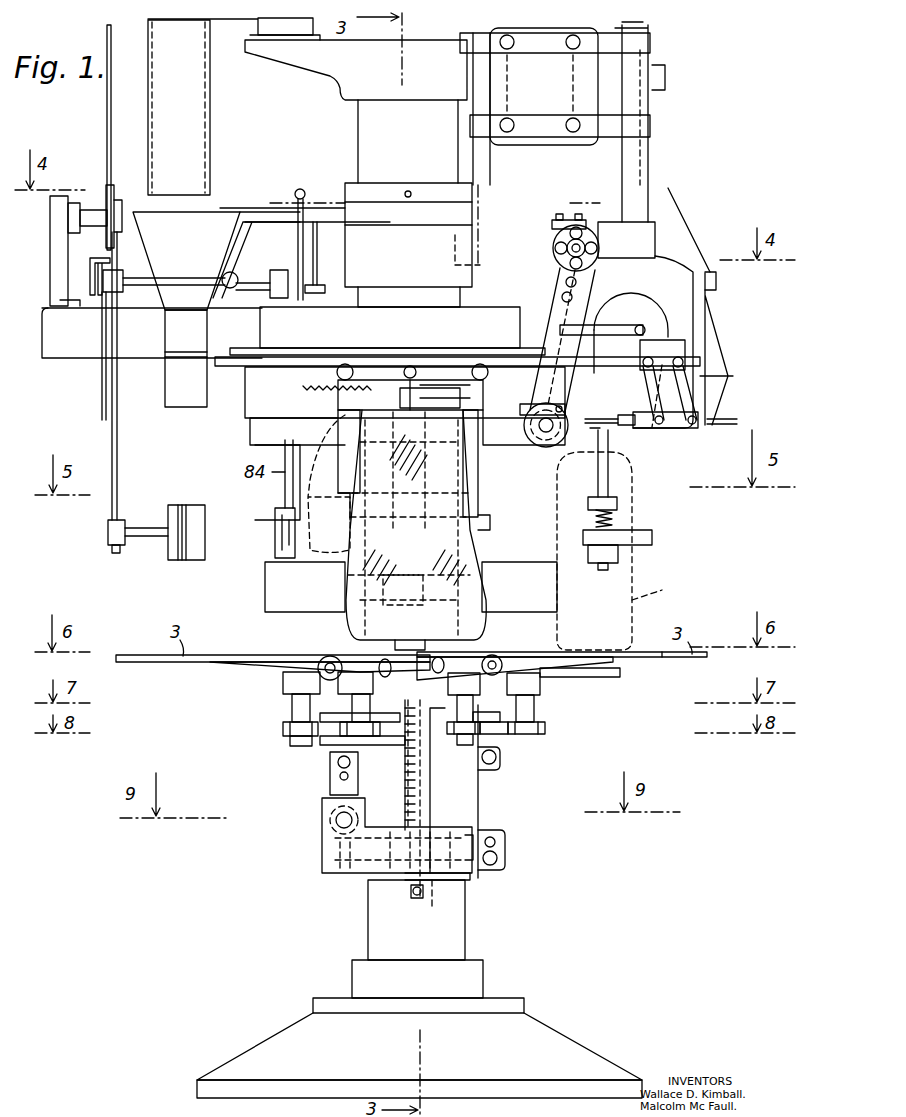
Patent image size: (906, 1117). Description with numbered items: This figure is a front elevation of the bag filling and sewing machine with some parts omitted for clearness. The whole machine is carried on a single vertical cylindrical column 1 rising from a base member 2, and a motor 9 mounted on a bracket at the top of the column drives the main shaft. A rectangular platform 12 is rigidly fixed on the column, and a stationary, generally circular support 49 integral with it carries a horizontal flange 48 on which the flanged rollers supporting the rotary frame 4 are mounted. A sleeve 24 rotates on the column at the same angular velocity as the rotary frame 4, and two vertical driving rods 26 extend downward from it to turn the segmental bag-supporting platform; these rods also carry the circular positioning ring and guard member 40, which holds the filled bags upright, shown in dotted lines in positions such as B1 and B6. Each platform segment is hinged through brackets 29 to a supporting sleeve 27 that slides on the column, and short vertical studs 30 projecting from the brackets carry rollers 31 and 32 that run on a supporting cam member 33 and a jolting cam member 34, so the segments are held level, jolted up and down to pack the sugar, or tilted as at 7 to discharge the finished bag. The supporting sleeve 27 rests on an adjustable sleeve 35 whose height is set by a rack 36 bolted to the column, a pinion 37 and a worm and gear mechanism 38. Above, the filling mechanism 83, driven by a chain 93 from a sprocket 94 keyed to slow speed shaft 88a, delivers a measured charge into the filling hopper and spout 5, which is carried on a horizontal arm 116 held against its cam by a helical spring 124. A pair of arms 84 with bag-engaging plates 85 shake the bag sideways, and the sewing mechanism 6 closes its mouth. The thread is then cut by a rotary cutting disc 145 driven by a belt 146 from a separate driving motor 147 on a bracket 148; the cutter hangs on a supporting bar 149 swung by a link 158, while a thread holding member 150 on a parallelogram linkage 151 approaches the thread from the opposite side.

The vertical cylindrical column 1 is at (468, 920).
The base member 2 is at (535, 1030).
The rotary frame 4 is at (229, 400).
The filling hopper and spout 5 is at (170, 380).
The sewing mechanism 6 is at (705, 318).
The tilted platform segment position 7 is at (582, 668).
The motor 9 is at (540, 140).
The rectangular platform 12 is at (68, 348).
The sleeve 24 is at (478, 465).
The vertical driving rods 26 is at (470, 535).
The supporting sleeve 27 is at (433, 702).
The brackets 29 is at (265, 672).
The vertical studs 30 is at (290, 708).
The rollers 31 is at (283, 730).
The rollers 32 is at (290, 742).
The supporting cam member 33 is at (322, 713).
The jolting cam member 34 is at (322, 745).
The adjustable sleeve 35 is at (480, 803).
The rack 36 is at (410, 886).
The pinion 37 is at (435, 900).
The worm and gear mechanism 38 is at (322, 845).
The circular positioning ring and guard member 40 is at (518, 605).
The horizontal flange 48 is at (235, 350).
The stationary circular support 49 is at (412, 270).
The filling mechanism 83 is at (210, 132).
The arms 84 is at (117, 470).
The bag-engaging plates 85 is at (205, 527).
The slow speed shaft 88a is at (95, 213).
The chain 93 is at (107, 108).
The sprocket 94 is at (116, 188).
The horizontal arm 116 is at (233, 212).
The helical spring 124 is at (303, 190).
The rotary cutting disc 145 is at (545, 436).
The belt 146 is at (618, 320).
The driving motor 147 is at (600, 262).
The bracket 148 is at (534, 220).
The supporting bar 149 is at (568, 310).
The thread holding member 150 is at (625, 425).
The parallelogram linkage 151 is at (702, 399).
The link 158 is at (520, 397).
The bottle B1 is at (486, 532).
The bottle position B6 is at (623, 551).